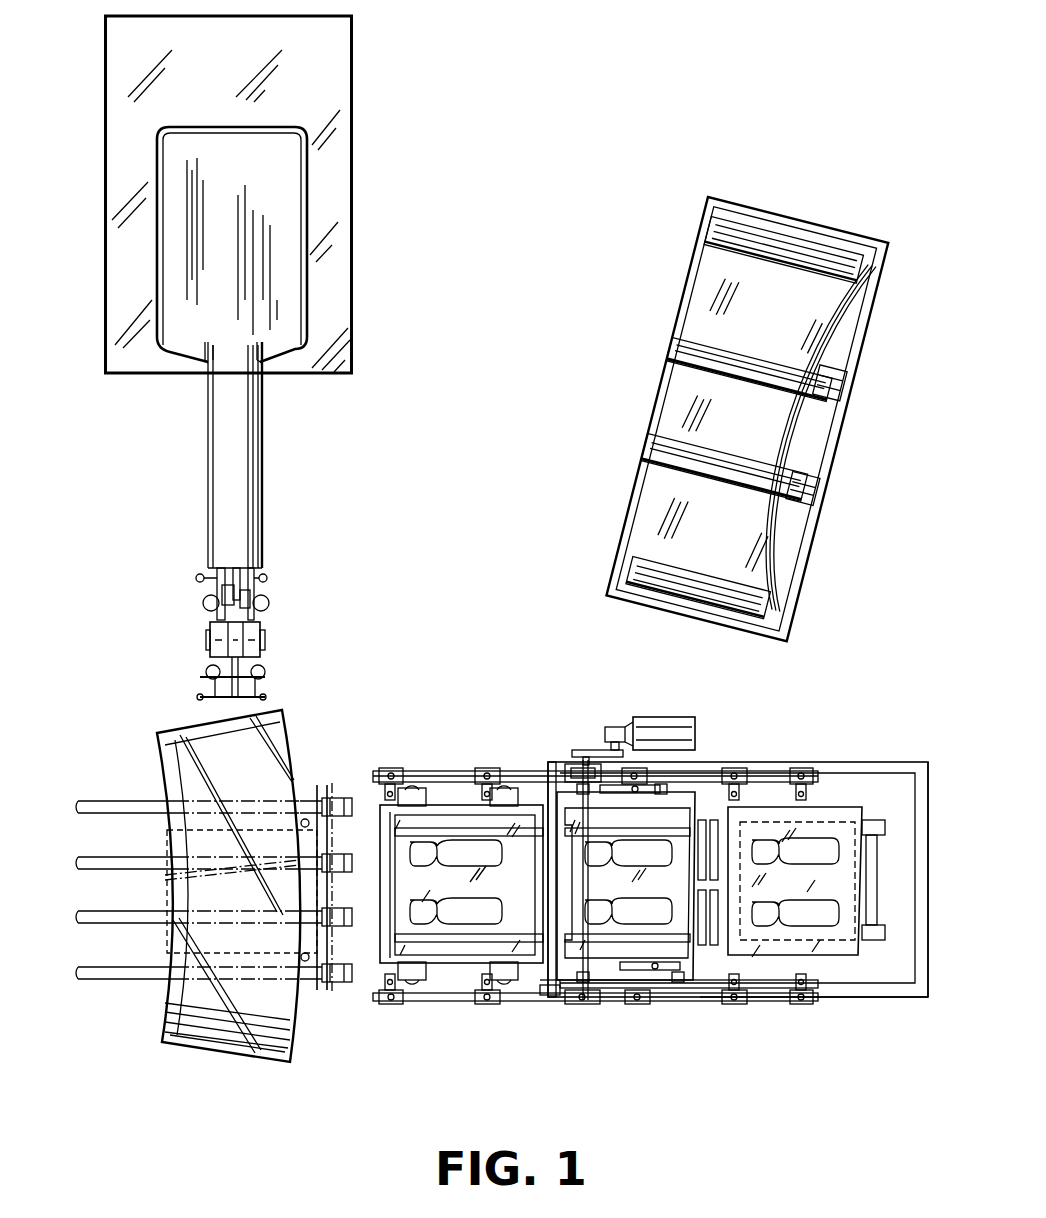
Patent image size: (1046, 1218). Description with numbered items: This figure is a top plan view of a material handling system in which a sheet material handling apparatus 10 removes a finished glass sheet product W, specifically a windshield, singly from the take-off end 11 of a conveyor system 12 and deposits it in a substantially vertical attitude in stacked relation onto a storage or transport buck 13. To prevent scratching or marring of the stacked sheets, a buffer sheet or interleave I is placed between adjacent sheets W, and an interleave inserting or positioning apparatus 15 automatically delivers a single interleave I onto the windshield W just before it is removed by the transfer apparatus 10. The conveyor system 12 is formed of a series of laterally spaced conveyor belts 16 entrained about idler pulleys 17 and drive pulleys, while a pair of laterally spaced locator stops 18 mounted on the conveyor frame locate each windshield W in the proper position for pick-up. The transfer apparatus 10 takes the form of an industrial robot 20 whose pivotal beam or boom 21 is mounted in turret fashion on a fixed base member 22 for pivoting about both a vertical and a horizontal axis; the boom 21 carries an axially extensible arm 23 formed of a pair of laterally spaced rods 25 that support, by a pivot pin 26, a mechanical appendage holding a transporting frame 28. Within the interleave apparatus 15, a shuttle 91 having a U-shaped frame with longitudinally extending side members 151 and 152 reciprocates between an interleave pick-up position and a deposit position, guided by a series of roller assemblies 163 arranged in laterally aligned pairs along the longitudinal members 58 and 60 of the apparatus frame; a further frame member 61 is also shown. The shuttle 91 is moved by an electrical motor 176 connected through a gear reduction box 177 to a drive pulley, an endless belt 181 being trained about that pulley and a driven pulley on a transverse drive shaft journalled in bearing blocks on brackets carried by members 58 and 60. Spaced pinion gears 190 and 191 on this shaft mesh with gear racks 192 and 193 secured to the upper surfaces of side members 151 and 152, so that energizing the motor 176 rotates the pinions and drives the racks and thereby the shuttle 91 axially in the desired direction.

The sheet material handling apparatus 10 is at (280, 500).
The take-off end 11 is at (306, 984).
The conveyor system 12 is at (132, 992).
The storage or transport buck 13 is at (803, 214).
The interleave inserting or positioning apparatus 15 is at (612, 1010).
The conveyor belts 16 is at (110, 805).
The idler pulleys 17 is at (336, 805).
The locator stops 18 is at (305, 818).
The industrial robot 20 is at (268, 396).
The pivotal beam or boom 21 is at (220, 448).
The fixed base member 22 is at (352, 147).
The axially extensible arm 23 is at (270, 588).
The rods 25 is at (250, 608).
The pivot pin 26 is at (266, 638).
The transporting frame 28 is at (204, 676).
The longitudinal member 58 is at (848, 762).
The longitudinal member 60 is at (880, 998).
The frame side member 61 is at (926, 876).
The shuttle 91 is at (545, 993).
The side member 151 is at (553, 999).
The side member 152 is at (554, 790).
The roller assemblies 163 is at (485, 767).
The electrical motor 176 is at (655, 719).
The gear reduction box 177 is at (613, 727).
The endless belt 181 is at (600, 756).
The pinion gear 190 is at (593, 983).
The pinion gear 191 is at (592, 792).
The gear rack 192 is at (680, 980).
The gear rack 193 is at (662, 794).
The buffer sheet or interleave I is at (797, 470).
The glass sheet product W is at (847, 313).